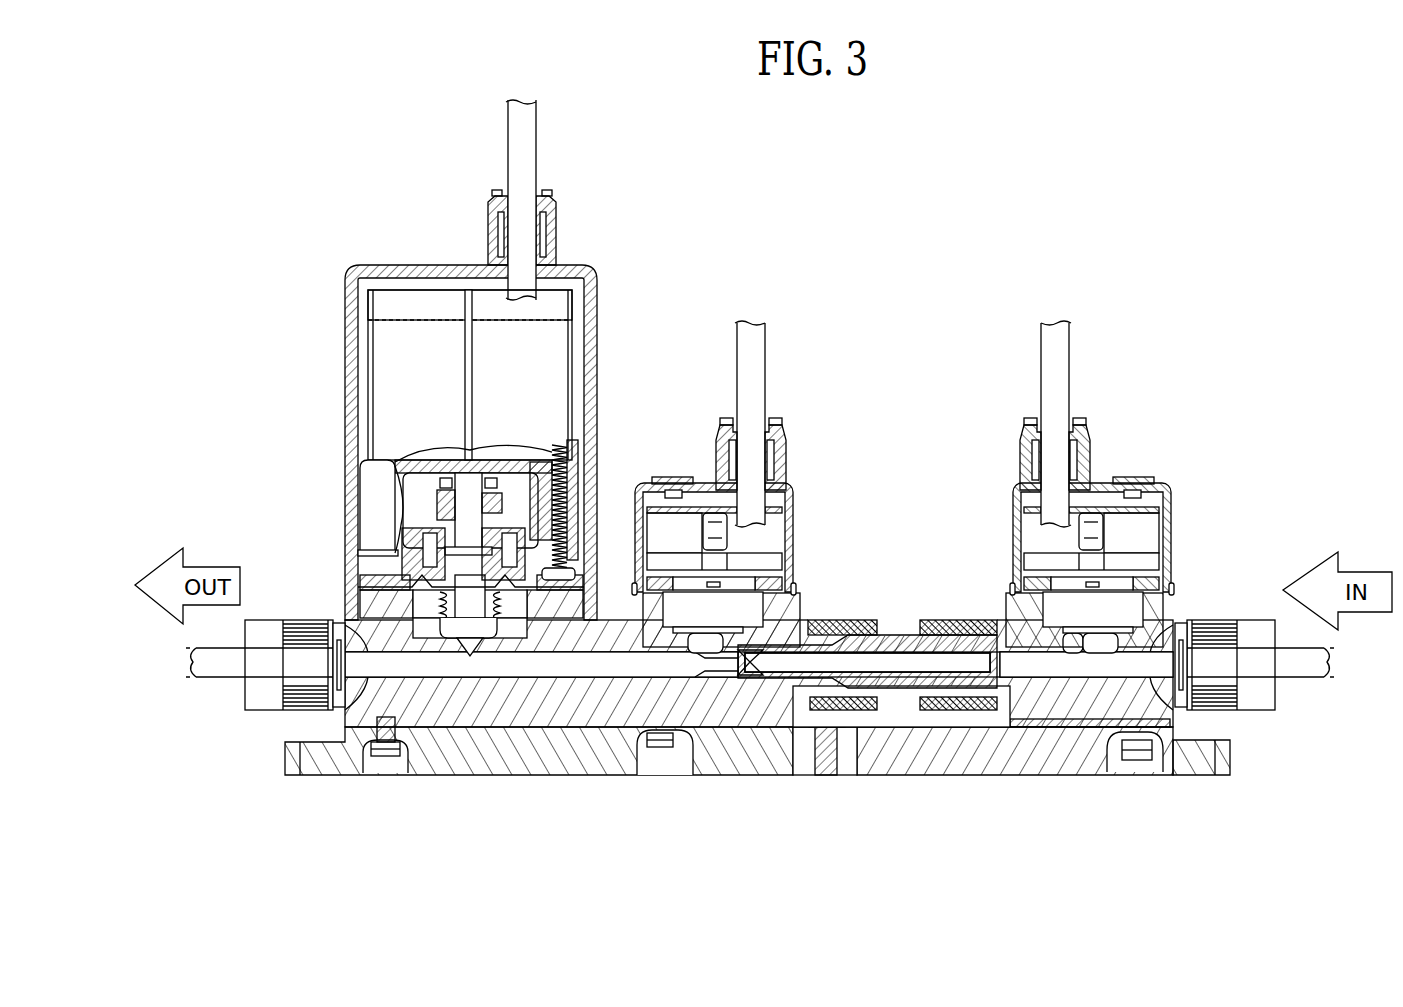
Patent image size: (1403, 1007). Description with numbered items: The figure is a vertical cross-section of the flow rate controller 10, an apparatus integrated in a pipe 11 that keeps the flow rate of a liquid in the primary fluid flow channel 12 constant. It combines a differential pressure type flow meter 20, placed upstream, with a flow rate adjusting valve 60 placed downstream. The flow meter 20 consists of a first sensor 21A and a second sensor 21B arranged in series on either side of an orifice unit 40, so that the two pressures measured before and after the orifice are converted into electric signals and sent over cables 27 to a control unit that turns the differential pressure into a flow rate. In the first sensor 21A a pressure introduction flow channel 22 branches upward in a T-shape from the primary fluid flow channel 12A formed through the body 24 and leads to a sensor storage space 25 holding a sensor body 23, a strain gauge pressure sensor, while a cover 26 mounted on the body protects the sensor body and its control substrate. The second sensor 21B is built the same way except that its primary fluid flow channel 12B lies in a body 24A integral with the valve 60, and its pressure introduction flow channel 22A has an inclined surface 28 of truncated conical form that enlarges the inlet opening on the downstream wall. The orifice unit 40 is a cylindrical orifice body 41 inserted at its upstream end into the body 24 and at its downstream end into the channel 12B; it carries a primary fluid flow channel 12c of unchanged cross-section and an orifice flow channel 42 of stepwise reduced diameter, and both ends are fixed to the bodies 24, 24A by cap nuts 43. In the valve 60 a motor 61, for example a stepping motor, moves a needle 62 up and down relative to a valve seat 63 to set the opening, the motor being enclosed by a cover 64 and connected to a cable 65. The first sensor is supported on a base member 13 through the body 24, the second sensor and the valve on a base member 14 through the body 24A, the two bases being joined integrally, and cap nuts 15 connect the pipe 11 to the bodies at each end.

The flow rate controller 10 is at (1082, 211).
The pipe 11 is at (210, 683).
The primary fluid flow channel 12 is at (617, 667).
The primary fluid flow channel 12A is at (1086, 750).
The primary fluid flow channel 12B is at (541, 736).
The primary fluid flow channel 12c is at (867, 625).
The base member 13 is at (940, 760).
The base member 14 is at (508, 777).
The cap nut 15 is at (262, 710).
The differential pressure type flow meter 20 is at (926, 465).
The first sensor 21A is at (1175, 450).
The second sensor 21B is at (805, 482).
The pressure introduction flow channel 22 is at (1065, 640).
The pressure introduction flow channel 22A is at (710, 642).
The sensor body 23 is at (740, 592).
The body 24 is at (1100, 700).
The body 24A is at (560, 715).
The sensor storage space 25 is at (760, 632).
The cover 26 is at (637, 483).
The cable 27 is at (755, 352).
The inclined surface 28 is at (695, 655).
The orifice unit 40 is at (893, 628).
The orifice body 41 is at (900, 690).
The orifice flow channel 42 is at (752, 675).
The cap nuts 43 is at (860, 620).
The flow rate adjusting valve 60 is at (476, 462).
The motor 61 is at (548, 348).
The needle 62 is at (471, 660).
The valve seat 63 is at (493, 642).
The cover 64 is at (590, 282).
The cable 65 is at (524, 150).